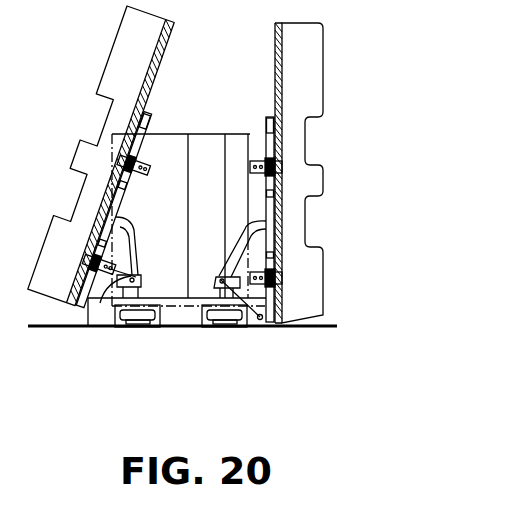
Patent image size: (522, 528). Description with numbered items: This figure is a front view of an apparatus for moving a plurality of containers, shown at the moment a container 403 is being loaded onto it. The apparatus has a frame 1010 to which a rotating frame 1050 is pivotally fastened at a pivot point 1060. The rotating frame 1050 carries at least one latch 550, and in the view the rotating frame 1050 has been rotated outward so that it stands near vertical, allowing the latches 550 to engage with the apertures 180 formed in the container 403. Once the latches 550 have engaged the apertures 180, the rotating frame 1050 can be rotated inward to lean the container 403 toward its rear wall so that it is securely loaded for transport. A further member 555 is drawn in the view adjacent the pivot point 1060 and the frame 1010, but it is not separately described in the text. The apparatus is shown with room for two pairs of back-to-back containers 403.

The container 403 is at (124, 68).
The latch 550 is at (262, 160).
The rotating frame 1050 is at (133, 164).
The aperture 180 is at (286, 170).
The frame 1010 is at (176, 306).
The pivot point 1060 is at (217, 284).
The link arm 555 is at (259, 320).